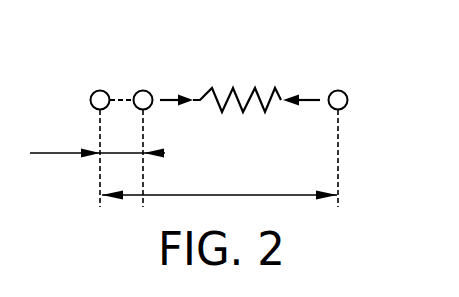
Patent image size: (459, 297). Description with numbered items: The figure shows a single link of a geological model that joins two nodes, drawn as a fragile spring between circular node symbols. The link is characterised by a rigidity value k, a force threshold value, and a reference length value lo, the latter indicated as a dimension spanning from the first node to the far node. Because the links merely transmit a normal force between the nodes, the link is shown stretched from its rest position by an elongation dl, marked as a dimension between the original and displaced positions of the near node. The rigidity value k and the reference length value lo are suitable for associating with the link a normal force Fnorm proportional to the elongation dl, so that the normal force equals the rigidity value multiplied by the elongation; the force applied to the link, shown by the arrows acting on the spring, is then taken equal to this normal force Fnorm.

The normal force Fnorm is at (170, 93).
The rigidity value k is at (237, 79).
The elongation dl is at (97, 138).
The reference length value lo is at (219, 175).